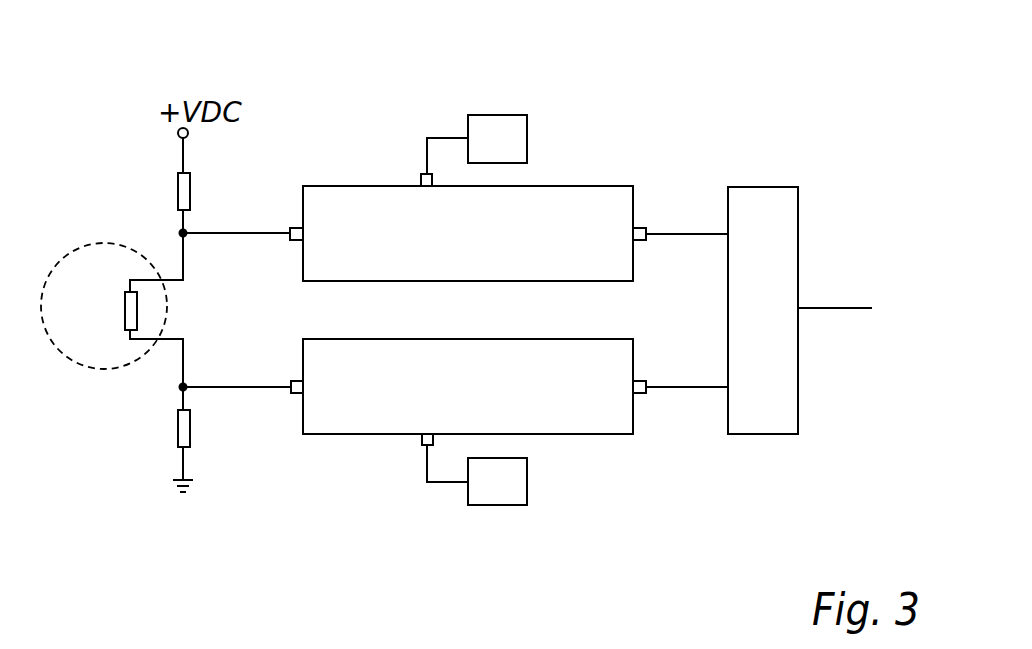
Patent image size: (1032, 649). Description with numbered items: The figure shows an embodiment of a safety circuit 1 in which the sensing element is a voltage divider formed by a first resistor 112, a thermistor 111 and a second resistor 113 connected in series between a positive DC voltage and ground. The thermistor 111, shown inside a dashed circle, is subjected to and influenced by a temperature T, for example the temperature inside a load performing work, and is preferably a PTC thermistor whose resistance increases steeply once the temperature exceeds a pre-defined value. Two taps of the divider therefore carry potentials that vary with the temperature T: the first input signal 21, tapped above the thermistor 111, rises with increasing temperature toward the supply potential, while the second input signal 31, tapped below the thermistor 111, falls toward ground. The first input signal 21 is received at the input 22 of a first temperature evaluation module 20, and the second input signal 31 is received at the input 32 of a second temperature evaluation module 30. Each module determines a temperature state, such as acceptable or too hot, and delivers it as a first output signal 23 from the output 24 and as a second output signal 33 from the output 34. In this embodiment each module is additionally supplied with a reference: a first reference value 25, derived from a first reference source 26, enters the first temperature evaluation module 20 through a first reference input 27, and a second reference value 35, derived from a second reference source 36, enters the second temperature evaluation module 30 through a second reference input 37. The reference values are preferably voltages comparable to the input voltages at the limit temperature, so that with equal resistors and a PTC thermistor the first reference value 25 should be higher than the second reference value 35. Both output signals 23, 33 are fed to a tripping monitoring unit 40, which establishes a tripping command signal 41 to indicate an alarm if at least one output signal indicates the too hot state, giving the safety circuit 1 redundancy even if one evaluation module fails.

The safety circuit 1 is at (722, 66).
The temperature T is at (88, 302).
The first temperature evaluation module 20 is at (410, 243).
The first input signal 21 is at (223, 233).
The input of first temperature evaluation module 22 is at (288, 228).
The first output signal 23 is at (680, 234).
The output of first temperature evaluation module 24 is at (638, 228).
The first reference value 25 is at (427, 152).
The first reference source 26 is at (482, 156).
The first reference input 27 is at (420, 181).
The second temperature evaluation module 30 is at (411, 398).
The second input signal 31 is at (223, 387).
The input of second temperature evaluation module 32 is at (293, 393).
The second output signal 33 is at (678, 387).
The output of second temperature evaluation module 34 is at (638, 393).
The second reference value 35 is at (425, 467).
The second reference source 36 is at (482, 499).
The second reference input 37 is at (420, 443).
The tripping monitoring unit 40 is at (750, 325).
The tripping command signal 41 is at (818, 308).
The thermistor 111 is at (123, 315).
The first resistor 112 is at (177, 187).
The second resistor 113 is at (177, 430).